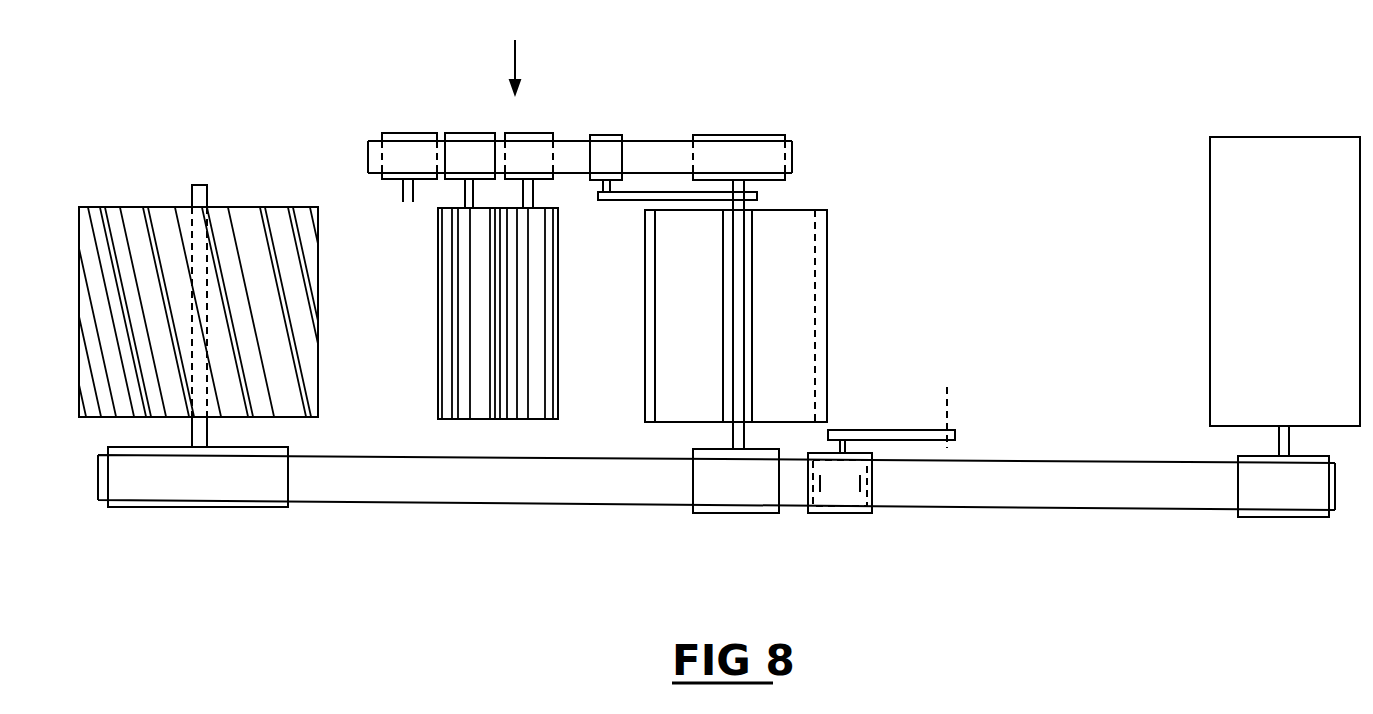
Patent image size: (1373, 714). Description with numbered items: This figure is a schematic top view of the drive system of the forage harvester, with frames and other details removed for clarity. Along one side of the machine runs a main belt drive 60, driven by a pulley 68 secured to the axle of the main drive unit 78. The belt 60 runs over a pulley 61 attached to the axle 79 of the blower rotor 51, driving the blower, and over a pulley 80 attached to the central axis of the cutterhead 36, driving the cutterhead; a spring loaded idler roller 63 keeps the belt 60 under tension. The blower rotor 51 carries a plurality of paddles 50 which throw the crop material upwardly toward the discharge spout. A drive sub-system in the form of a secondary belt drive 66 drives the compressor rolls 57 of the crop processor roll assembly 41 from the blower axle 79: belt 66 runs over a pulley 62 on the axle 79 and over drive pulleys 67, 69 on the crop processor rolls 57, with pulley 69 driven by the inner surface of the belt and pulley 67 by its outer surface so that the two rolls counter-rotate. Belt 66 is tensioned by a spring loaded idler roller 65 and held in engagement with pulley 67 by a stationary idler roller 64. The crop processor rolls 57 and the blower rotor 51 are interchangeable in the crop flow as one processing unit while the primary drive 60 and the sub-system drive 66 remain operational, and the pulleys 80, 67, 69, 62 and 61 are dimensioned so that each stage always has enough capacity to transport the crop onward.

The cutterhead 36 is at (131, 207).
The crop processor roll assembly 41 is at (518, 51).
The paddles 50 is at (805, 271).
The blower rotor 51 is at (795, 221).
The compressor rolls 57 is at (533, 420).
The main belt drive 60 is at (465, 492).
The pulley 61 is at (732, 513).
The pulley 62 is at (744, 135).
The idler roller 63 is at (840, 513).
The stationary idler roller 64 is at (413, 133).
The idler roller 65 is at (612, 135).
The secondary belt drive 66 is at (656, 141).
The drive pulley 67 is at (474, 133).
The pulley 68 is at (1280, 517).
The drive pulley 69 is at (534, 133).
The main drive unit 78 is at (1220, 186).
The axle 79 is at (733, 430).
The pulley 80 is at (196, 508).